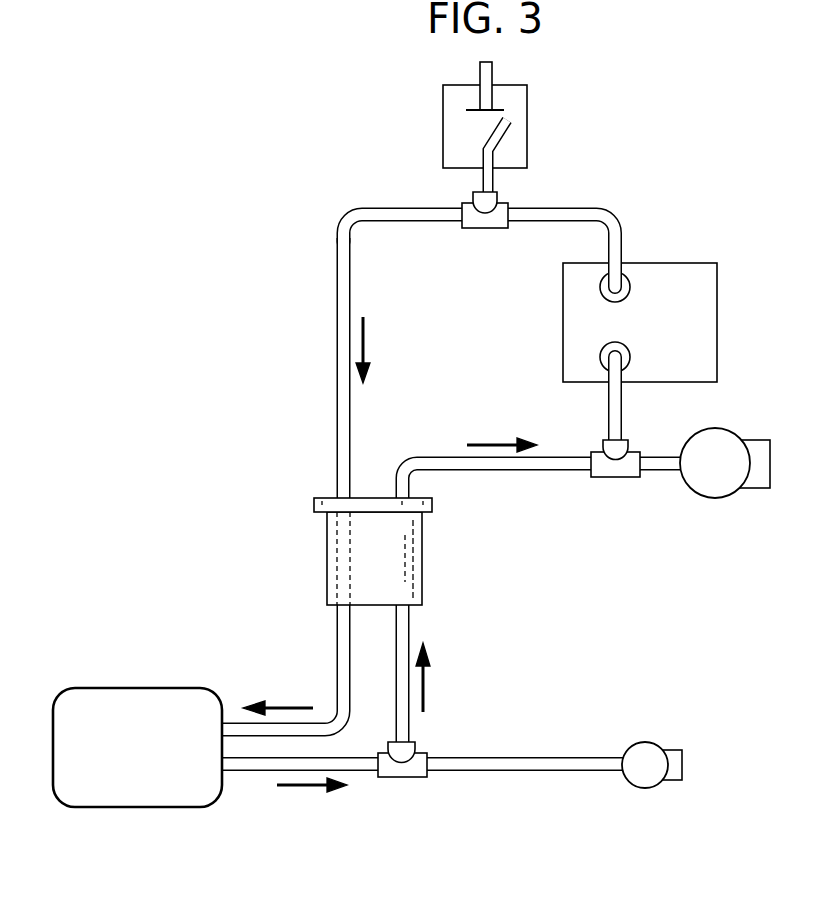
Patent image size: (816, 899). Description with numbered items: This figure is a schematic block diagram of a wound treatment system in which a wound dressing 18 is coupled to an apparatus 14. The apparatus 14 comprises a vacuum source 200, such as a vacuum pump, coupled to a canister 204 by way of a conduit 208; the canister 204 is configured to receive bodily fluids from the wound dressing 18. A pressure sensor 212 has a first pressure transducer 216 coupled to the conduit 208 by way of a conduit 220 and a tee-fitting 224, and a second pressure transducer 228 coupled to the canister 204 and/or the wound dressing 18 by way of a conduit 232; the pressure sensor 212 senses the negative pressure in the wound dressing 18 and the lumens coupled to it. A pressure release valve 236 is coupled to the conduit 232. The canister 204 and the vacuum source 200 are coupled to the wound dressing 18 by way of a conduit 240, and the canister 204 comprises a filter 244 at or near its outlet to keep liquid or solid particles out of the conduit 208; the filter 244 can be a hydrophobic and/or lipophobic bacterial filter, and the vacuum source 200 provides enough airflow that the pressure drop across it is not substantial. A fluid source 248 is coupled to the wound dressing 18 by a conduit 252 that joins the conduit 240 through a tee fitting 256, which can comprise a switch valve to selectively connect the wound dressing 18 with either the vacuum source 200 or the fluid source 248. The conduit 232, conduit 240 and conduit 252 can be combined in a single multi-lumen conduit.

The apparatus 14 is at (214, 195).
The wound dressing 18 is at (153, 764).
The vacuum source 200 is at (717, 500).
The canister 204 is at (327, 557).
The conduit 208 is at (505, 475).
The pressure sensor 212 is at (562, 322).
The first pressure transducer 216 is at (630, 357).
The conduit 220 is at (608, 417).
The tee-fitting 224 is at (615, 478).
The second pressure transducer 228 is at (630, 285).
The conduit 232 is at (335, 650).
The pressure release valve 236 is at (443, 127).
The conduit 240 is at (410, 628).
The filter 244 is at (313, 503).
The fluid source 248 is at (643, 790).
The conduit 252 is at (523, 772).
The tee fitting 256 is at (402, 778).